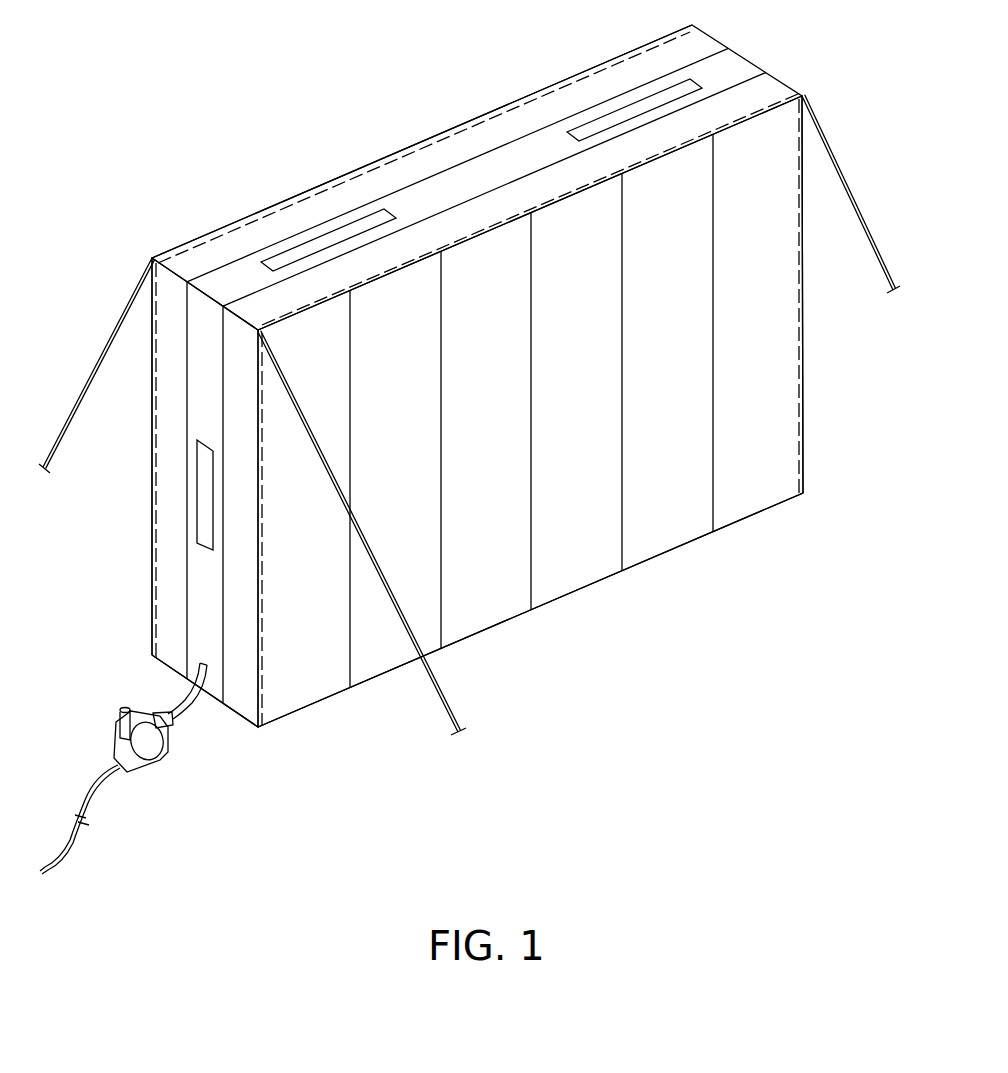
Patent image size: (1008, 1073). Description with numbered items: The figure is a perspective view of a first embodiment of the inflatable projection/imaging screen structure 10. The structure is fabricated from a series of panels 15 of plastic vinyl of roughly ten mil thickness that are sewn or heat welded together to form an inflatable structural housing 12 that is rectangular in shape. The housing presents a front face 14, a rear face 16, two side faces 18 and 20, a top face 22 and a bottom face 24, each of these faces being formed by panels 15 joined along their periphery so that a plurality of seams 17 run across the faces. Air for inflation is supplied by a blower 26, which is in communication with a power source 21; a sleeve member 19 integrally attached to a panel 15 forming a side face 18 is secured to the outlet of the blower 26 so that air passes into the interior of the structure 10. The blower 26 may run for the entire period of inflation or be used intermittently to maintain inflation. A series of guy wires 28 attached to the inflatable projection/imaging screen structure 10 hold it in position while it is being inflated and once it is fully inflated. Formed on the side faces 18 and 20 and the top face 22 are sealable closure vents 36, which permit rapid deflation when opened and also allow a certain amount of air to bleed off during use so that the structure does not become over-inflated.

The inflatable projection/imaging screen structure 10 is at (571, 752).
The inflatable structural housing 12 is at (185, 243).
The front face 14 is at (589, 385).
The panels 15 is at (292, 217).
The rear face 16 is at (398, 152).
The seams 17 is at (537, 132).
The side face 18 is at (221, 410).
The sleeve member 19 is at (193, 707).
The side face 20 is at (805, 272).
The power source 21 is at (88, 790).
The top face 22 is at (471, 200).
The bottom face 24 is at (568, 597).
The blower 26 is at (157, 762).
The guy wires 28 is at (122, 315).
The sealable closure vents 36 is at (205, 523).